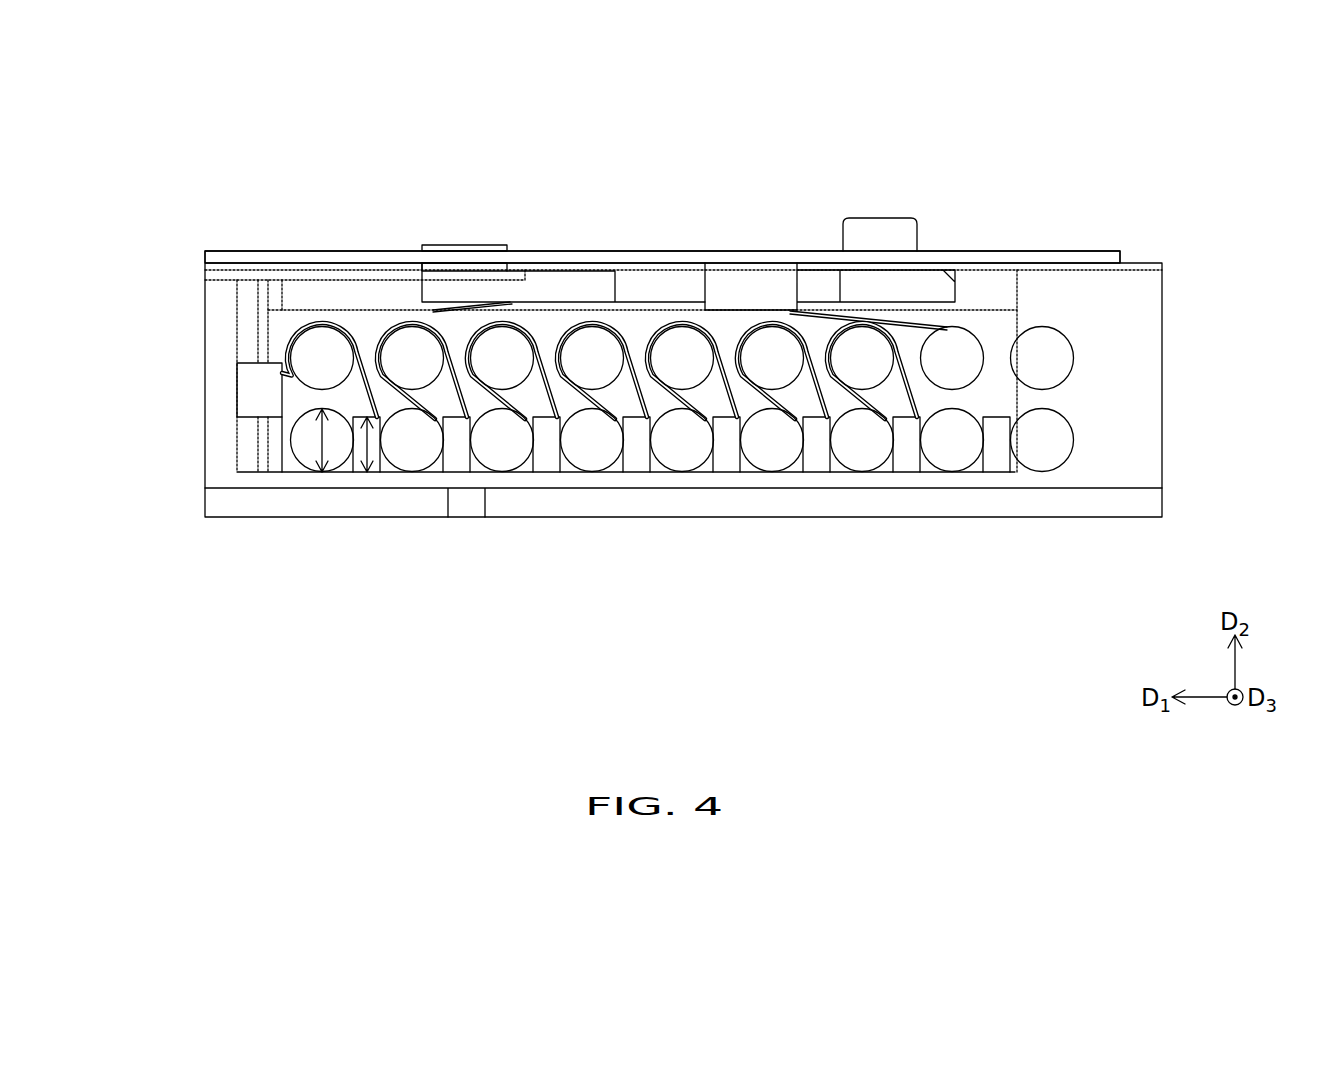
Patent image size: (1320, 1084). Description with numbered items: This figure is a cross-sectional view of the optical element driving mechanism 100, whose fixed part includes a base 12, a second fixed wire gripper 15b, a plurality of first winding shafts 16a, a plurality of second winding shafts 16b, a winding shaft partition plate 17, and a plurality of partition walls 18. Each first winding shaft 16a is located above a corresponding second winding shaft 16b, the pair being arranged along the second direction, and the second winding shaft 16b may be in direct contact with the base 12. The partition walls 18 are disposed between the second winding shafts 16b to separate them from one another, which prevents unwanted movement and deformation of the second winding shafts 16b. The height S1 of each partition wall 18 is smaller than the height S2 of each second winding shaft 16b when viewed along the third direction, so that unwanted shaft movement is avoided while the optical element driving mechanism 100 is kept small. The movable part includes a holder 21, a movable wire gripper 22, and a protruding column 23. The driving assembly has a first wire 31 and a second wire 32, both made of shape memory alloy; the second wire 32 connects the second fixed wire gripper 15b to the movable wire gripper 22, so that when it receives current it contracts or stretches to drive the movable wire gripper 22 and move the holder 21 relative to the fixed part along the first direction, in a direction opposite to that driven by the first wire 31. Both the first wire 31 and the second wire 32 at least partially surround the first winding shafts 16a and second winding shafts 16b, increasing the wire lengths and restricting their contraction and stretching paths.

The optical element driving mechanism 100 is at (228, 122).
The base 12 is at (685, 480).
The second fixed wire gripper 15b is at (256, 390).
The first winding shaft 16a is at (953, 358).
The second winding shaft 16b is at (303, 445).
The winding shaft partition plate 17 is at (275, 340).
The partition wall 18 is at (910, 445).
The holder 21 is at (553, 290).
The movable wire gripper 22 is at (752, 287).
The protruding column 23 is at (880, 235).
The first wire 31 is at (472, 310).
The second wire 32 is at (283, 342).
The height of each partition wall S1 is at (378, 455).
The height of each second winding shaft S2 is at (318, 455).